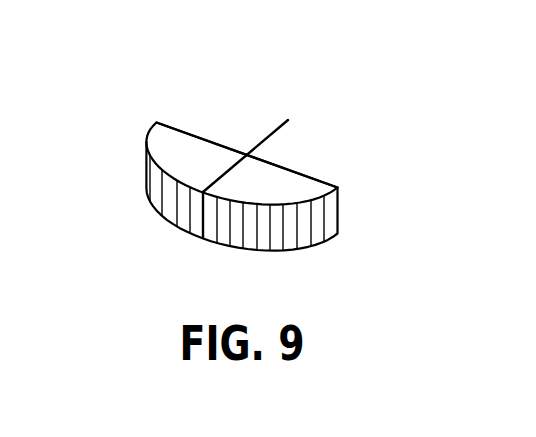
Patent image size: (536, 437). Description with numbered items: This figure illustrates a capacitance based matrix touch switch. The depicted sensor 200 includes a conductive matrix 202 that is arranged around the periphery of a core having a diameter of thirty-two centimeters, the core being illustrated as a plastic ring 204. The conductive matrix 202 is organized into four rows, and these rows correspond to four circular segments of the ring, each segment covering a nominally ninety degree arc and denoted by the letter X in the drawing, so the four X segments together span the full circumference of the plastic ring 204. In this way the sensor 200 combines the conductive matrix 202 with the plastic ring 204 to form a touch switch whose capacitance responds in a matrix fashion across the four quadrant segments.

The sensor 200 is at (200, 132).
The conductive matrix 202 is at (157, 143).
The plastic ring 204 is at (197, 118).